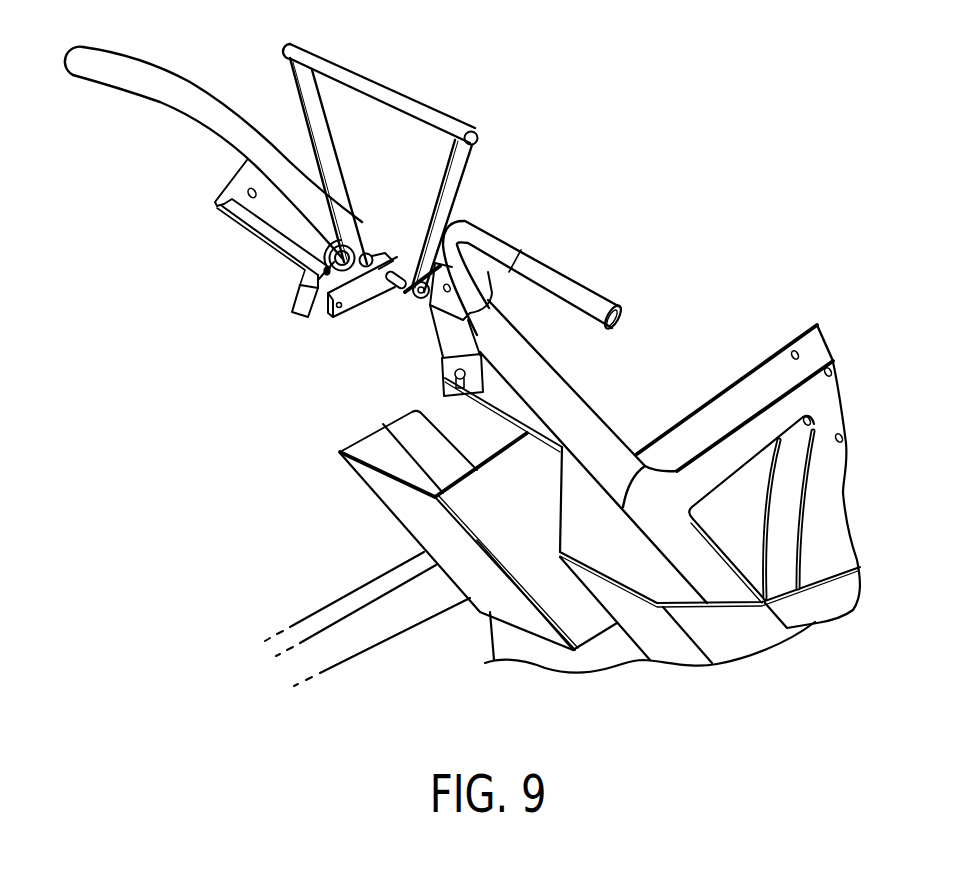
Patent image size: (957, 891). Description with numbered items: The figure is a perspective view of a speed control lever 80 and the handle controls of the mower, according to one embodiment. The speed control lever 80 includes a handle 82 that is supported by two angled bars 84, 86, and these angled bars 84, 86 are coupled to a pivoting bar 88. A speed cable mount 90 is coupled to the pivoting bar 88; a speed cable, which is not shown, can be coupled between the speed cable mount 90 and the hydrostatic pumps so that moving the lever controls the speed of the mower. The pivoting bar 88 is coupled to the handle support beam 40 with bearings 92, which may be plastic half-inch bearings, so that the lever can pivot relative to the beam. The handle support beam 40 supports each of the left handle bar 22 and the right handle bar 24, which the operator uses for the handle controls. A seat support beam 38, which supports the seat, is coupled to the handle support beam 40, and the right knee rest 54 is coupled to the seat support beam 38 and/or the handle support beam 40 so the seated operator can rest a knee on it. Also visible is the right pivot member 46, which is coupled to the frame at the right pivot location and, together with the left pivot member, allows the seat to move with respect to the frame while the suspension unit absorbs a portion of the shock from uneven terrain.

The left handle bar 22 is at (103, 73).
The right handle bar 24 is at (590, 290).
The seat support beam 38 is at (720, 413).
The handle support beam 40 is at (560, 395).
The right pivot member 46 is at (365, 592).
The right knee rest 54 is at (381, 485).
The speed control lever 80 is at (409, 152).
The handle 82 is at (433, 112).
The angled bar 84 is at (328, 141).
The angled bar 86 is at (455, 183).
The pivoting bar 88 is at (374, 259).
The speed cable mount 90 is at (335, 316).
The bearings 92 is at (347, 278).